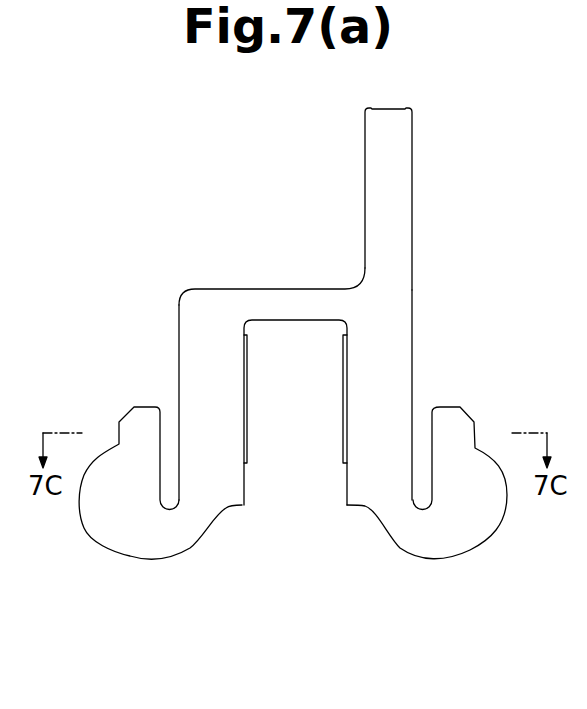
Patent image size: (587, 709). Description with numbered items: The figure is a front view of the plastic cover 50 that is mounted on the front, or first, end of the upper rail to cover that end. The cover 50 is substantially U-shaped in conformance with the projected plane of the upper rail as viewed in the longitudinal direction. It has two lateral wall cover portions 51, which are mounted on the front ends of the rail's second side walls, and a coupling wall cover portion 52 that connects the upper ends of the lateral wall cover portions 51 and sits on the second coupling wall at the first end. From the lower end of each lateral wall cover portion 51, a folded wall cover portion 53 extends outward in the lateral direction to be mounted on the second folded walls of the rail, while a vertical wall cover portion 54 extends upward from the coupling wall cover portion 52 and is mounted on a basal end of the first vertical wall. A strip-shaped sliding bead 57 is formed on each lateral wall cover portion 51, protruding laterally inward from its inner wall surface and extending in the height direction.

The cover 50 is at (152, 245).
The lateral wall cover portion 51 is at (193, 342).
The coupling wall cover portion 52 is at (288, 295).
The folded wall cover portion 53 is at (97, 543).
The vertical wall cover portion 54 is at (400, 140).
The sliding bead 57 is at (343, 453).